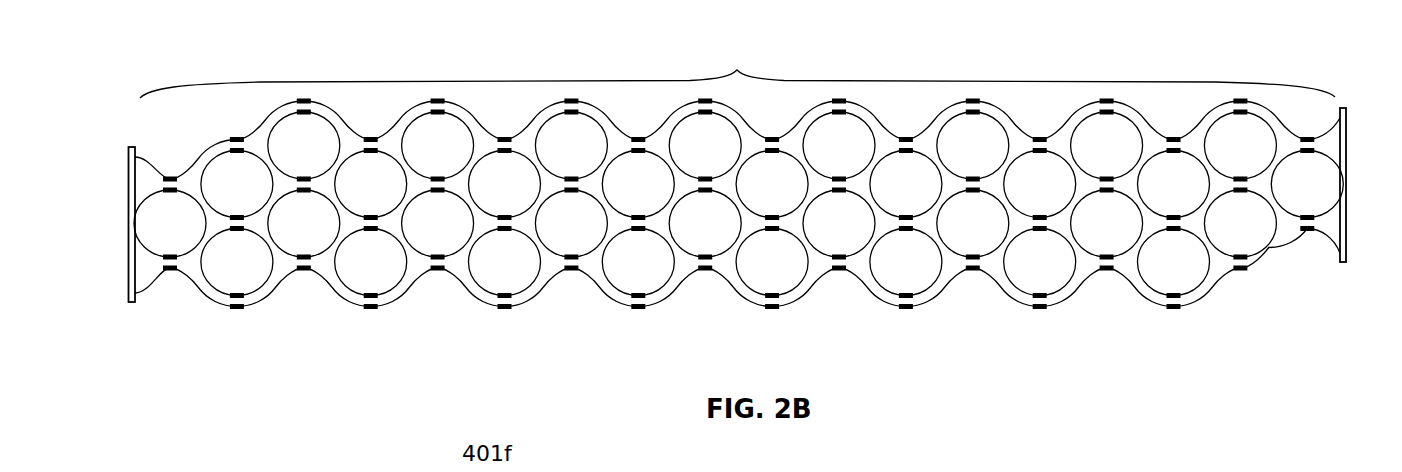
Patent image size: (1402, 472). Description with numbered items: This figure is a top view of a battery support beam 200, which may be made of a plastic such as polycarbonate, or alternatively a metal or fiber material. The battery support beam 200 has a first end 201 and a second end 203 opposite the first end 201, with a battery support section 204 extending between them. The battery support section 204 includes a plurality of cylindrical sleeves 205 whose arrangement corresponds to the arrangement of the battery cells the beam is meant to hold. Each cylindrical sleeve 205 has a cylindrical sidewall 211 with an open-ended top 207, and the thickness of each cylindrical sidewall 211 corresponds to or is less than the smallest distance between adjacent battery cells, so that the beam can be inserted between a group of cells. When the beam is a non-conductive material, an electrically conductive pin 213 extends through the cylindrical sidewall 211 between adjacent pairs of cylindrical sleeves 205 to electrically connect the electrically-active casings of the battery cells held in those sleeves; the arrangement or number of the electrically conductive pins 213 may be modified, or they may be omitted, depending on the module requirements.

The battery support beam 200 is at (192, 41).
The first end 201 is at (128, 245).
The second end 203 is at (1348, 235).
The battery support section 204 is at (737, 67).
The cylindrical sleeve 205 is at (915, 308).
The open-ended top 207 is at (627, 270).
The cylindrical sidewall 211 is at (198, 285).
The electrically conductive pin 213 is at (237, 311).